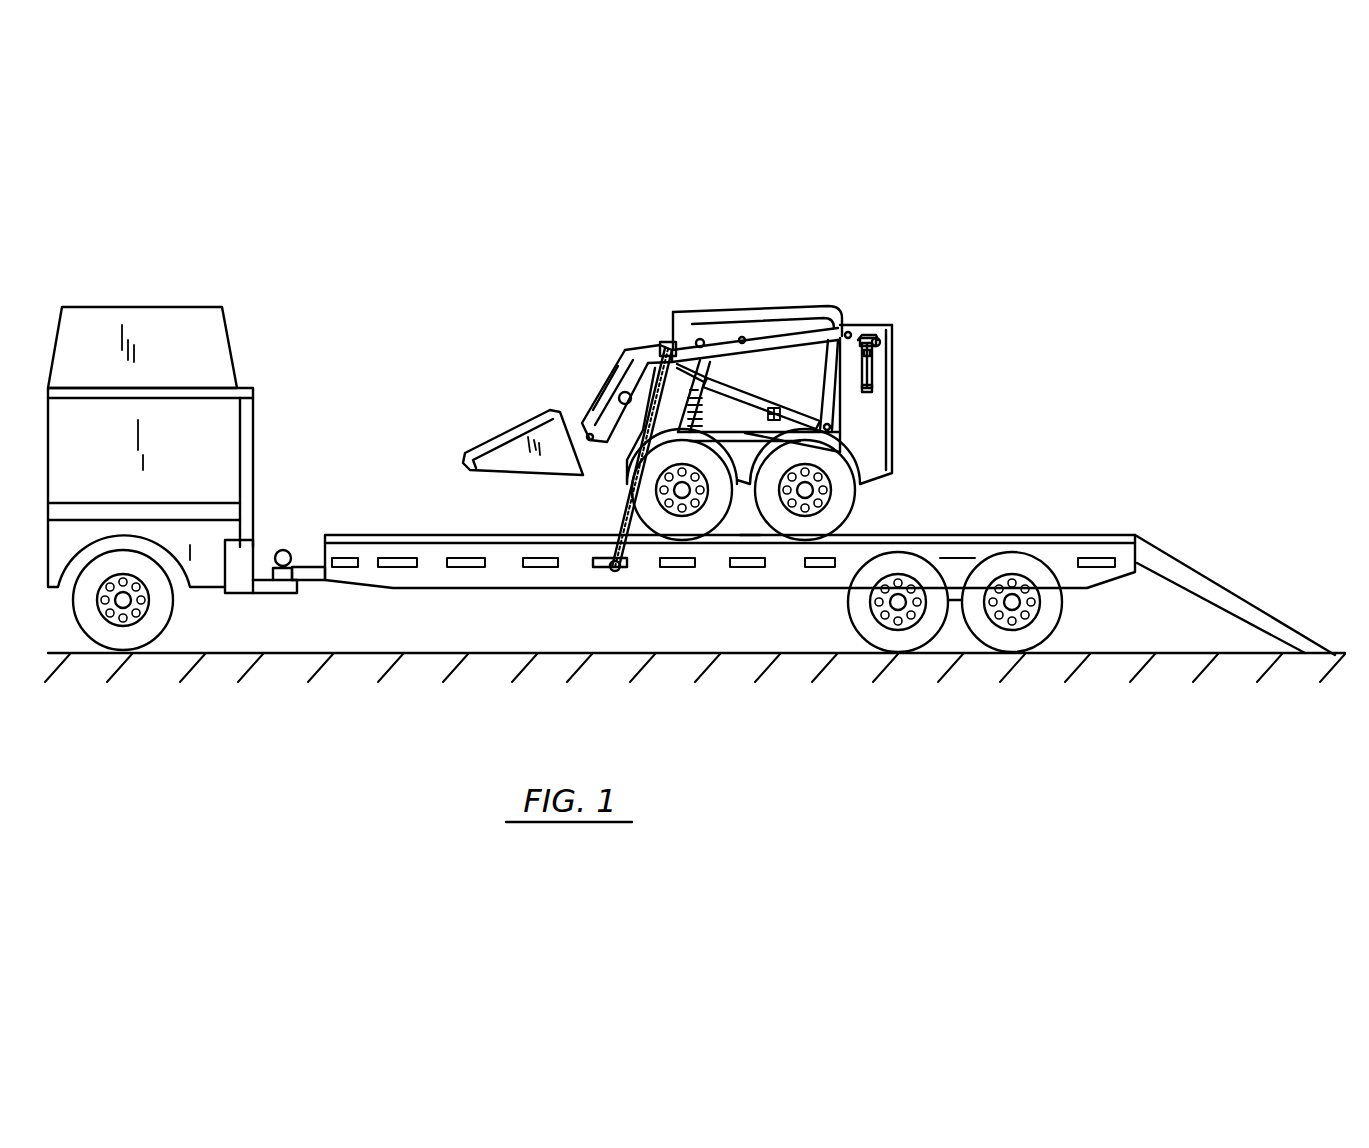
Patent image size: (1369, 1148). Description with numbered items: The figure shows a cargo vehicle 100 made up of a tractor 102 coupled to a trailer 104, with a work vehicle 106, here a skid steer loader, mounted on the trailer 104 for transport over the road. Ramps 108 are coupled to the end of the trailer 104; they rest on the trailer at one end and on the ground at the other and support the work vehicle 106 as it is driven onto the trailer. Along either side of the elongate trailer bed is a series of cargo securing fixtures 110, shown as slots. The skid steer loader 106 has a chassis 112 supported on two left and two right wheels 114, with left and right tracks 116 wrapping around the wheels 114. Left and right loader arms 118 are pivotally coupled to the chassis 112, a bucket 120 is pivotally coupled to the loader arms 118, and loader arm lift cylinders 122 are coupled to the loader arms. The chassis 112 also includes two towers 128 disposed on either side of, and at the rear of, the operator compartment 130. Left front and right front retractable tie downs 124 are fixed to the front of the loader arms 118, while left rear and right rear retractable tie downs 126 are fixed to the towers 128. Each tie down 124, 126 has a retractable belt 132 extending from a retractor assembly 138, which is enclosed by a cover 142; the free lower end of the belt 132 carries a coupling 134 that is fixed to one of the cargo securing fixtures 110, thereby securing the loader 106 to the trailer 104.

The cargo vehicle 100 is at (238, 236).
The tractor 102 is at (272, 370).
The trailer 104 is at (372, 528).
The work vehicle 106 is at (888, 292).
The ramps 108 is at (1194, 583).
The cargo securing fixtures 110 is at (597, 570).
The chassis 112 is at (752, 522).
The wheels 114 is at (712, 528).
The tracks 116 is at (740, 440).
The loader arms 118 is at (750, 342).
The bucket 120 is at (530, 433).
The loader arm lift cylinders 122 is at (740, 388).
The front retractable tie downs 124 is at (664, 343).
The rear retractable tie downs 126 is at (880, 347).
The towers 128 is at (853, 410).
The operator compartment 130 is at (735, 363).
The retractable belt 132 is at (618, 514).
The coupling 134 is at (614, 572).
The retractor assembly 138 is at (662, 345).
The cover 142 is at (700, 340).